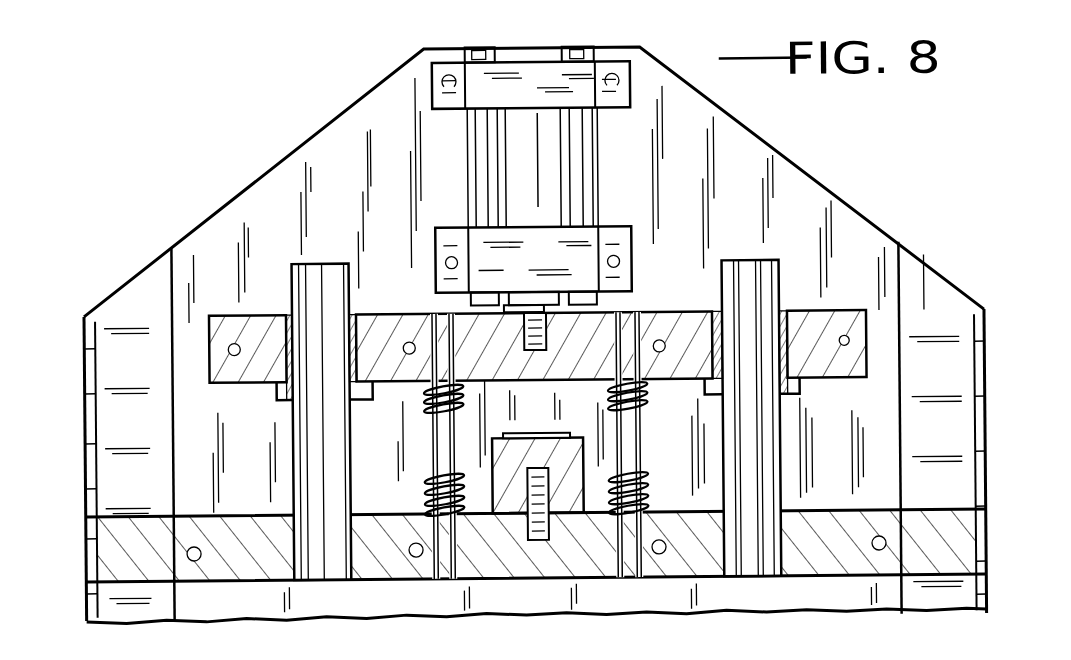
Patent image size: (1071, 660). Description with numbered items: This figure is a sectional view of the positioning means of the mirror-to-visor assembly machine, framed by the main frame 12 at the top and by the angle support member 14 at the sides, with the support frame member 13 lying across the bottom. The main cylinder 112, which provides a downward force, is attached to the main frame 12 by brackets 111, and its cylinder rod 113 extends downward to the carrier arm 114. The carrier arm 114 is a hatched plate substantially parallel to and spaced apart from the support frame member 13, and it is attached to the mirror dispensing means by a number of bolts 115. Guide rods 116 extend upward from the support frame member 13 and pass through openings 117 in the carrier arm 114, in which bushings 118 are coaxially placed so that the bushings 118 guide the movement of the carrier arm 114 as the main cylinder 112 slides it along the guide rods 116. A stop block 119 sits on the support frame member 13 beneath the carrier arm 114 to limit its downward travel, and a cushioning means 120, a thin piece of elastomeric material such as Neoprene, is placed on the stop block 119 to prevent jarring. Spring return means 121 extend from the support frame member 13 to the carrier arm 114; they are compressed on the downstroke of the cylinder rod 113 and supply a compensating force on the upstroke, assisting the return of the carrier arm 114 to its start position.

The main frame 12 is at (337, 147).
The support frame member 13 is at (223, 540).
The angle support member 14 is at (132, 302).
The brackets 111 is at (585, 70).
The main cylinder 112 is at (527, 143).
The cylinder rod 113 is at (557, 305).
The carrier arm 114 is at (233, 312).
The bolts 115 is at (208, 310).
The guide rods 116 is at (313, 267).
The openings 117 is at (360, 320).
The bushings 118 is at (290, 313).
The stop block 119 is at (582, 462).
The cushioning means 120 is at (523, 433).
The spring return means 121 is at (425, 488).